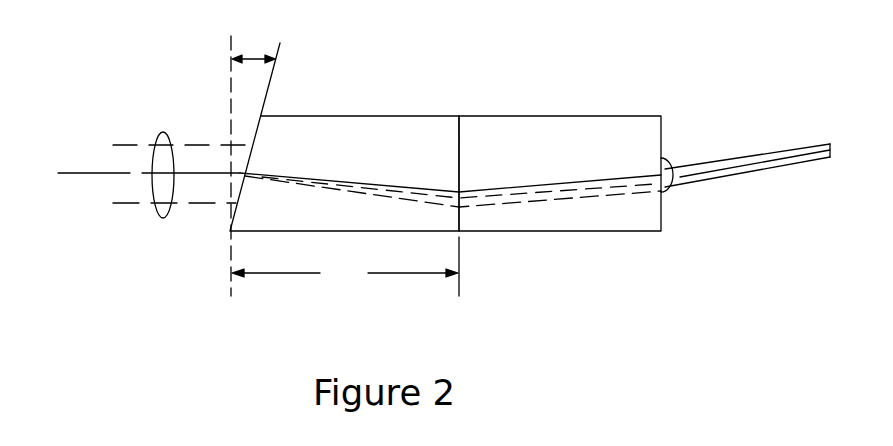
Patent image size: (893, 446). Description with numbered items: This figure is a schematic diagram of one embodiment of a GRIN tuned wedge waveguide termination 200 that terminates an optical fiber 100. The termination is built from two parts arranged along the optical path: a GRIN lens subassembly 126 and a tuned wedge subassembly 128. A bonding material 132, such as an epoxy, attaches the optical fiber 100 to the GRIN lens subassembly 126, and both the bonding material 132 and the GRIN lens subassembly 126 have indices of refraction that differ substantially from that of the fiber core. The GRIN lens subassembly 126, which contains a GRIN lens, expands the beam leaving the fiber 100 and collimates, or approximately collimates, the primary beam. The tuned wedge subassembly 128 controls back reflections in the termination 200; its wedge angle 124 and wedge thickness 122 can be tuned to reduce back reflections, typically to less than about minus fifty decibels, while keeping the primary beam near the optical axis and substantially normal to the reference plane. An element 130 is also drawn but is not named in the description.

The GRIN tuned wedge waveguide termination 200 is at (662, 72).
The tuned wedge subassembly 128 is at (392, 137).
The GRIN lens subassembly 126 is at (537, 150).
The wedge angle 124 is at (236, 166).
The wedge thickness 122 is at (345, 266).
The input focusing lens 130 is at (160, 132).
The bonding material 132 is at (663, 190).
The optical fiber 100 is at (745, 157).